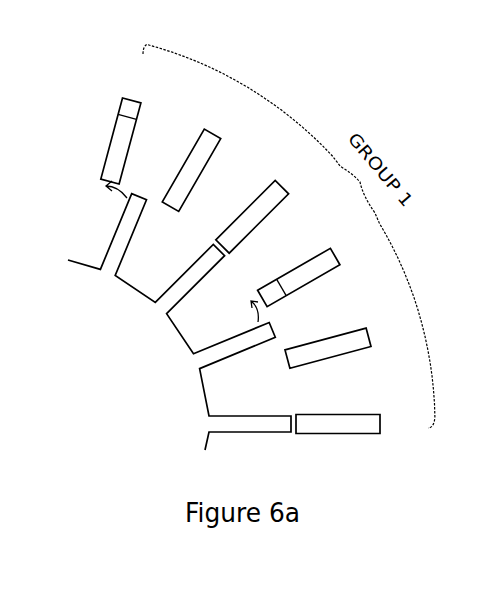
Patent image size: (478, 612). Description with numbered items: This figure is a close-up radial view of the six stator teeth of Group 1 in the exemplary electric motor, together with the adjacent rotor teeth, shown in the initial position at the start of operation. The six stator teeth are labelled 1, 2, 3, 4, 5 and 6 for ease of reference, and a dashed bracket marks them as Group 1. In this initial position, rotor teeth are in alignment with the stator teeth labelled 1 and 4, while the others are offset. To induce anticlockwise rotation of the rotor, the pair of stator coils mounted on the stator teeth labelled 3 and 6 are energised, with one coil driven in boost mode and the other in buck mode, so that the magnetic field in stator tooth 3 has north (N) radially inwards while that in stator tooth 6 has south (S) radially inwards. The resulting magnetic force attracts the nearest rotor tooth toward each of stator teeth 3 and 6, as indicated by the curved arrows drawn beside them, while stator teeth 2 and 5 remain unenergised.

The stator tooth 1 is at (355, 424).
The stator tooth 2 is at (343, 344).
The stator tooth 3 is at (312, 270).
The stator tooth 4 is at (262, 206).
The stator tooth 5 is at (198, 157).
The stator tooth 6 is at (125, 126).